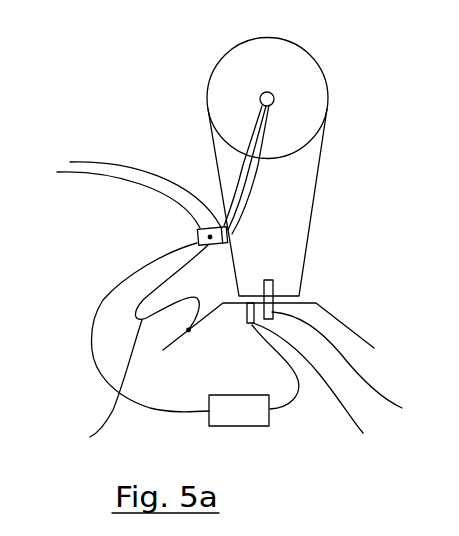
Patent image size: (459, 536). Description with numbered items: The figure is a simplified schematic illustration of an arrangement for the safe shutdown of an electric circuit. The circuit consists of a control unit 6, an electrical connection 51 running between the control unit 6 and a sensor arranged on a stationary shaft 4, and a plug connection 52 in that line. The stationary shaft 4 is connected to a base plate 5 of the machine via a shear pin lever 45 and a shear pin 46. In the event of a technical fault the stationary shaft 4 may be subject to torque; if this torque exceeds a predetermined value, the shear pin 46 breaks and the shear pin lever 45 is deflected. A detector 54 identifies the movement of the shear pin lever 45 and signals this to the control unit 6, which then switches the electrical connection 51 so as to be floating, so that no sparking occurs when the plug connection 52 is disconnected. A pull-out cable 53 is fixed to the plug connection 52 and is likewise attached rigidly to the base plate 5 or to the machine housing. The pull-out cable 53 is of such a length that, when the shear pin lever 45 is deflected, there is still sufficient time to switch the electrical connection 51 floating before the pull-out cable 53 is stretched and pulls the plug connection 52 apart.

The stationary shaft 4 is at (307, 72).
The shear pin lever 45 is at (297, 213).
The shear pin 46 is at (348, 352).
The base plate 5 is at (330, 328).
The electrical connection 51 is at (250, 168).
The plug connection 52 is at (130, 201).
The pull-out cable 53 is at (102, 387).
The detector 54 is at (321, 378).
The control unit 6 is at (253, 417).